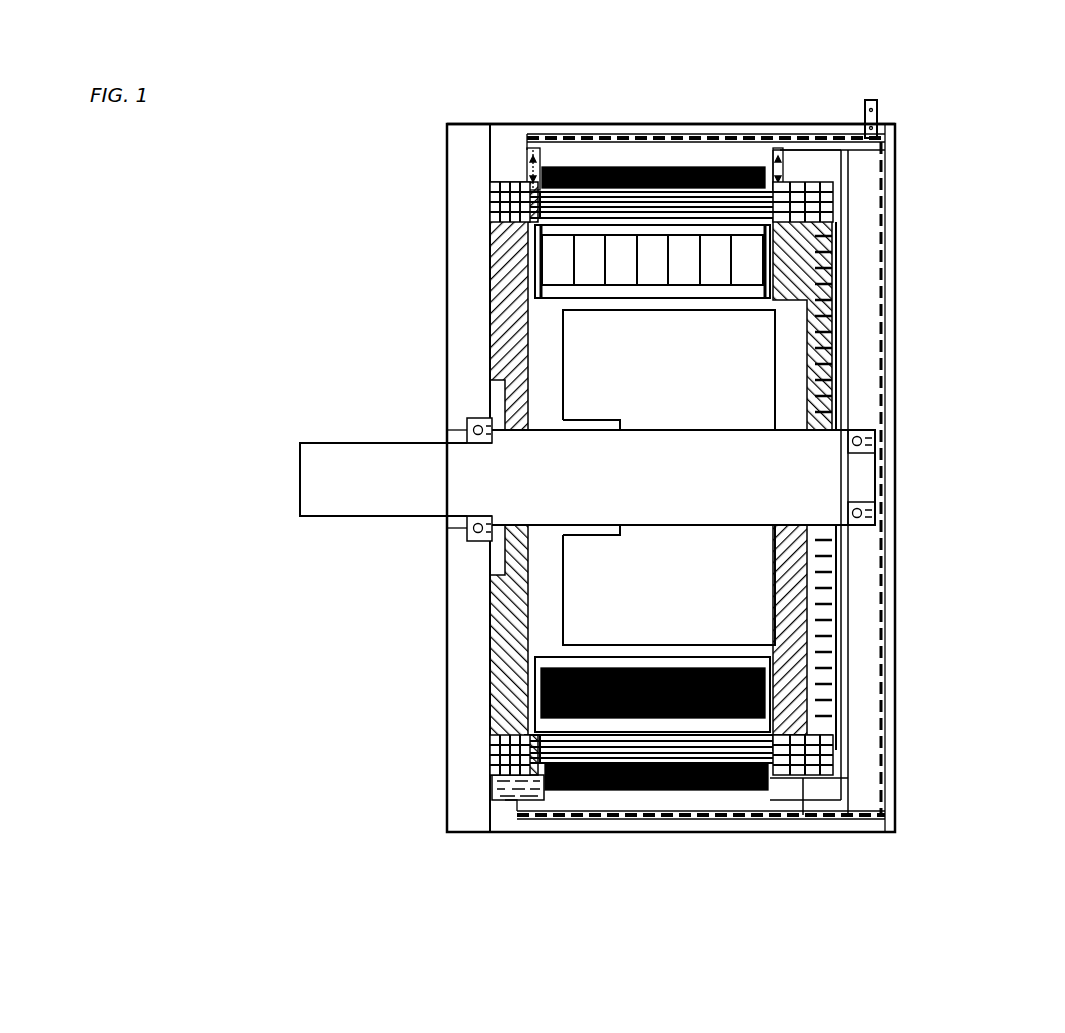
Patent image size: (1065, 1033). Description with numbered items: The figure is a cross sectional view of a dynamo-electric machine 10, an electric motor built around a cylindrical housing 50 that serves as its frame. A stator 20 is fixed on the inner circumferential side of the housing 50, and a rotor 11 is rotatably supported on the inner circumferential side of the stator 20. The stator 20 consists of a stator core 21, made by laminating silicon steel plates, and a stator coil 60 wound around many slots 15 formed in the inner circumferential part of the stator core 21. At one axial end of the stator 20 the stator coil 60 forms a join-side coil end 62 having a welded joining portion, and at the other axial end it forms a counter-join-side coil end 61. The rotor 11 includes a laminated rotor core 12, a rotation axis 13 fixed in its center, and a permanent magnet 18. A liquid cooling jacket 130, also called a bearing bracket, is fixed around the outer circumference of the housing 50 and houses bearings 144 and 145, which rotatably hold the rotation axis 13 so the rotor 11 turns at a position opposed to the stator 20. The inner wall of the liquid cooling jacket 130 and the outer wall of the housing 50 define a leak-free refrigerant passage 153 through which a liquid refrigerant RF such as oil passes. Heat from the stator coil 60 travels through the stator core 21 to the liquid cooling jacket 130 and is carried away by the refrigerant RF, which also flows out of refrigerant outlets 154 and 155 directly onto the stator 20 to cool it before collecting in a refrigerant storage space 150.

The dynamo-electric machine 10 is at (253, 186).
The rotor 11 is at (556, 393).
The rotor core 12 is at (512, 660).
The rotation axis 13 is at (328, 463).
The slots 15 is at (840, 692).
The permanent magnet 18 is at (556, 262).
The stator 20 is at (512, 712).
The stator core 21 is at (648, 166).
The housing 50 is at (780, 152).
The stator coil 60 is at (830, 335).
The counter-join-side coil end 61 is at (512, 300).
The join-side coil end 62 is at (830, 257).
The liquid cooling jacket 130 is at (895, 830).
The bearing 144 is at (472, 543).
The bearing 145 is at (872, 512).
The refrigerant storage space 150 is at (500, 786).
The refrigerant passage 153 is at (560, 130).
The refrigerant outlet 154 is at (470, 127).
The refrigerant outlet 155 is at (890, 150).
The refrigerant RF is at (522, 166).